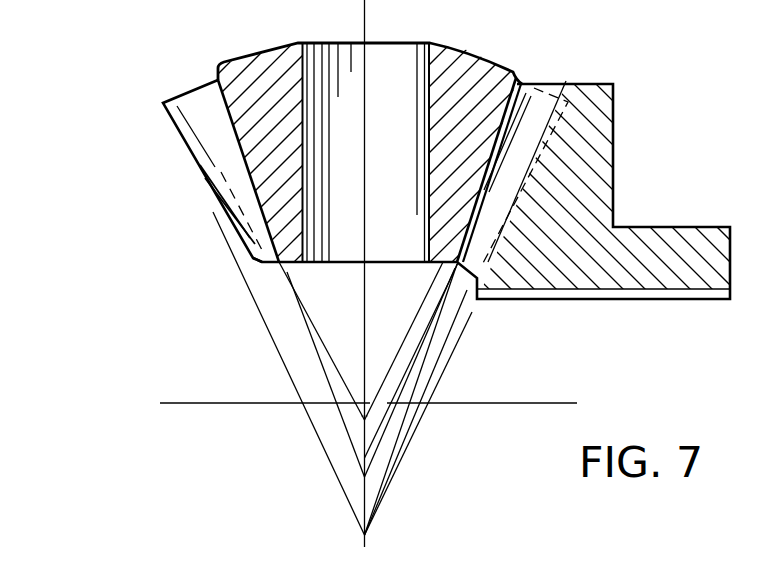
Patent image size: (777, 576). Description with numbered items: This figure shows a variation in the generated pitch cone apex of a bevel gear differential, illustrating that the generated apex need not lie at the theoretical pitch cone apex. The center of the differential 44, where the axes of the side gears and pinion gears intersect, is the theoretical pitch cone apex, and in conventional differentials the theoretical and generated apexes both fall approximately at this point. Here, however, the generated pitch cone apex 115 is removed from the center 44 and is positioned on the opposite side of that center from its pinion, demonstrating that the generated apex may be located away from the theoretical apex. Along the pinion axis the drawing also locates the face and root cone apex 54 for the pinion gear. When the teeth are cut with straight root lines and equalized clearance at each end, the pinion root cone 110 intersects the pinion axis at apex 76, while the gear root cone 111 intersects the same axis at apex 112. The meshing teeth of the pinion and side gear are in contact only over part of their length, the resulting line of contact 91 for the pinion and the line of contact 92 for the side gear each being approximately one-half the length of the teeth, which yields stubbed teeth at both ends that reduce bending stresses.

The pinion root cone 110 is at (227, 106).
The line of contact for the pinions 91 is at (233, 223).
The line of contact for the side gears 92 is at (508, 134).
The gear root cone 111 is at (569, 132).
The center of the differential 44 is at (366, 403).
The generated pitch cone apex 115 is at (364, 421).
The apex 112 is at (365, 458).
The apex 76 is at (365, 477).
The face and root cone apex 54 is at (365, 536).